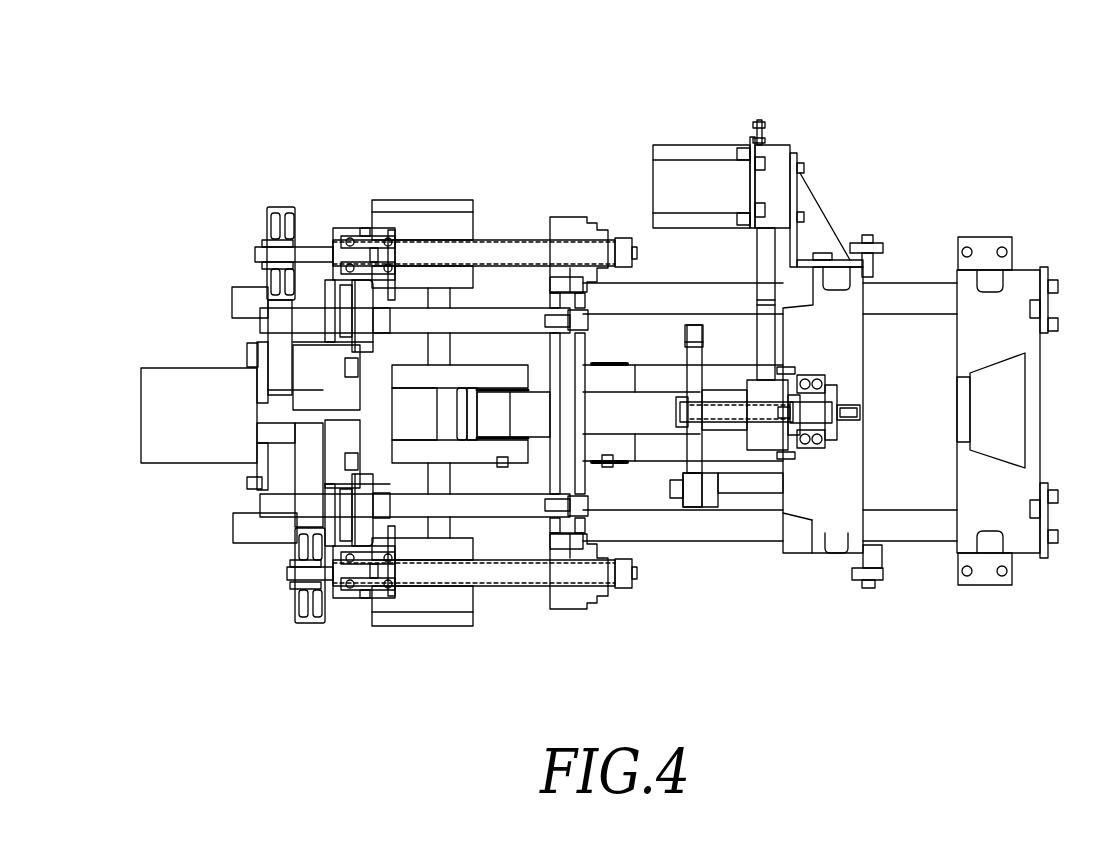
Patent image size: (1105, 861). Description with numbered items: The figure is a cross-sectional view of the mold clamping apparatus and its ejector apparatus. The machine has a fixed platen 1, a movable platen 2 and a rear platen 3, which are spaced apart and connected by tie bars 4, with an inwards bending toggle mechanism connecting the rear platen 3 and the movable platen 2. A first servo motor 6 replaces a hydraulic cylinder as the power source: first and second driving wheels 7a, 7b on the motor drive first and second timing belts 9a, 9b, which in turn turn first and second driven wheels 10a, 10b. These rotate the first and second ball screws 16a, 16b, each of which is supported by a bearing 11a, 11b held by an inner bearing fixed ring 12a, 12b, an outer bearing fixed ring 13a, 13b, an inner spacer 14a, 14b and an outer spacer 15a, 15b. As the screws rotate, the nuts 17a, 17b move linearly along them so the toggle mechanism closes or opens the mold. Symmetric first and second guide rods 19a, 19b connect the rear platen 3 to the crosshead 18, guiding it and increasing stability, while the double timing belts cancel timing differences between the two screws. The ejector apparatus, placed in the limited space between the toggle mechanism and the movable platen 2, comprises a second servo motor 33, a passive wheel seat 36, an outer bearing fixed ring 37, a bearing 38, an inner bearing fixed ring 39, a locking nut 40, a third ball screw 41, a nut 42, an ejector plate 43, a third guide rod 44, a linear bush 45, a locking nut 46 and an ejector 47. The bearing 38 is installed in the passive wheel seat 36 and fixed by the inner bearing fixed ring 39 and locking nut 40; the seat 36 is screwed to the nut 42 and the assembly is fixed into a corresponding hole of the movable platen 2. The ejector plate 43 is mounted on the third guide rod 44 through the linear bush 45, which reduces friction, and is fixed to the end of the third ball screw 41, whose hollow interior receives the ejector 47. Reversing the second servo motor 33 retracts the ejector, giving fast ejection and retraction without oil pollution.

The fixed platen 1 is at (1000, 317).
The movable platen 2 is at (837, 313).
The rear platen 3 is at (437, 203).
The tie bars 4 is at (642, 300).
The first servo motor 6 is at (153, 408).
The first driving wheel 7a is at (262, 432).
The second driving wheel 7b is at (300, 432).
The first timing belt 9a is at (277, 328).
The second timing belt 9b is at (303, 475).
The first driven wheel 10a is at (278, 213).
The second driven wheel 10b is at (297, 608).
The bearing 11a is at (388, 232).
The bearing 11b is at (393, 600).
The inner bearing fixed ring 12a is at (337, 227).
The inner bearing fixed ring 12b is at (337, 605).
The outer bearing fixed ring 13a is at (338, 228).
The outer bearing fixed ring 13b is at (333, 603).
The inner spacer 14a is at (373, 227).
The inner spacer 14b is at (387, 600).
The outer spacer 15a is at (372, 232).
The outer spacer 15b is at (372, 597).
The first ball screw 16a is at (478, 255).
The second ball screw 16b is at (527, 578).
The nut 17a is at (600, 233).
The nut 17b is at (598, 590).
The crosshead 18 is at (568, 440).
The first guide rod 19a is at (487, 325).
The second guide rod 19b is at (500, 515).
The second servo motor 33 is at (680, 183).
The passive wheel seat 36 is at (772, 443).
The outer bearing fixed ring 37 is at (817, 448).
The bearing 38 is at (797, 443).
The inner bearing fixed ring 39 is at (810, 372).
The locking nut 40 is at (830, 398).
The third ball screw 41 is at (712, 412).
The nut 42 is at (760, 400).
The ejector plate 43 is at (693, 495).
The third guide rod 44 is at (735, 493).
The linear bush 45 is at (712, 500).
The locking nut 46 is at (683, 422).
The ejector 47 is at (850, 413).